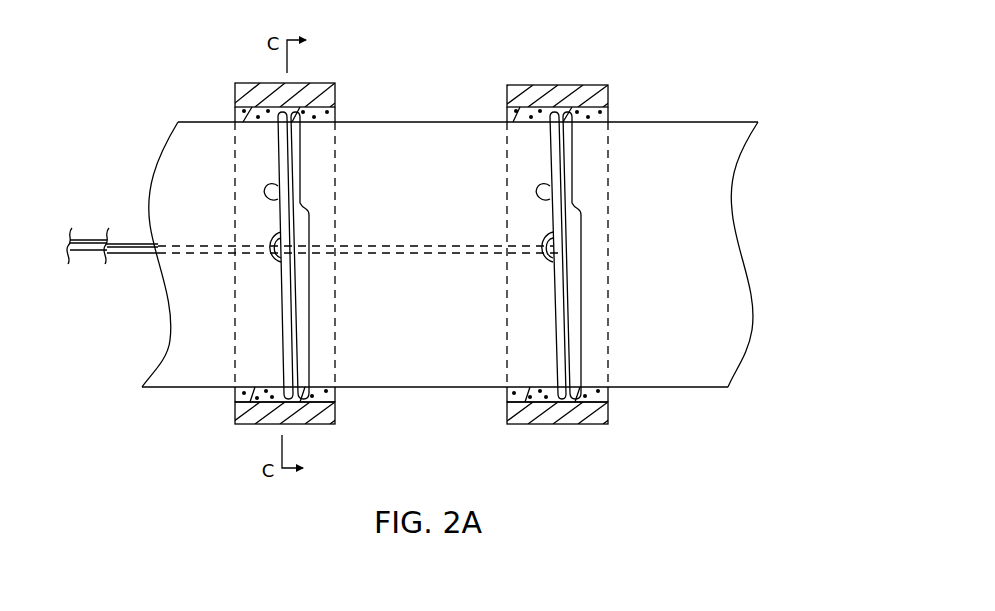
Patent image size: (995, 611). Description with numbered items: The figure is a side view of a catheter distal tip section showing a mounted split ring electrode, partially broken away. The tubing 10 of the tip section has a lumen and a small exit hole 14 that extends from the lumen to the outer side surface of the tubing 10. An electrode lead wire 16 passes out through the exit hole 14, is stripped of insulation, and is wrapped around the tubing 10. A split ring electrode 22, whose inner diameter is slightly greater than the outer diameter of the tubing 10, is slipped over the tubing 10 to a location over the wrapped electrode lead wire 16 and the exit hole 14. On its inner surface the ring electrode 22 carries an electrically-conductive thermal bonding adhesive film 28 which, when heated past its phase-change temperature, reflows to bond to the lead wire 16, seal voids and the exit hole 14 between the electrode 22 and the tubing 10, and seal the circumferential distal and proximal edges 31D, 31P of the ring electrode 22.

The tubing 10 is at (460, 122).
The split ring electrode 22 is at (243, 83).
The thermal bonding adhesive film 28 is at (337, 113).
The electrode lead wire 16 is at (130, 254).
The exit hole 14 is at (276, 264).
The proximal edge 31P is at (235, 212).
The distal edge 31D is at (337, 200).